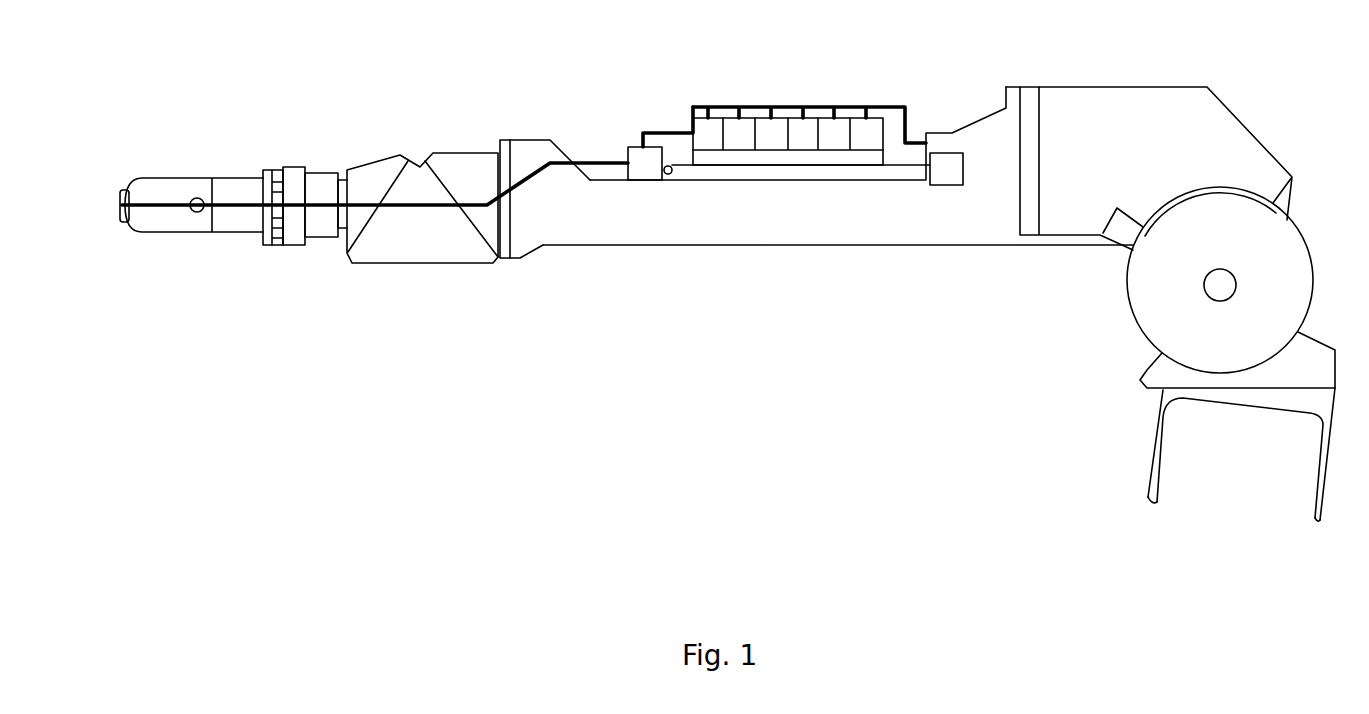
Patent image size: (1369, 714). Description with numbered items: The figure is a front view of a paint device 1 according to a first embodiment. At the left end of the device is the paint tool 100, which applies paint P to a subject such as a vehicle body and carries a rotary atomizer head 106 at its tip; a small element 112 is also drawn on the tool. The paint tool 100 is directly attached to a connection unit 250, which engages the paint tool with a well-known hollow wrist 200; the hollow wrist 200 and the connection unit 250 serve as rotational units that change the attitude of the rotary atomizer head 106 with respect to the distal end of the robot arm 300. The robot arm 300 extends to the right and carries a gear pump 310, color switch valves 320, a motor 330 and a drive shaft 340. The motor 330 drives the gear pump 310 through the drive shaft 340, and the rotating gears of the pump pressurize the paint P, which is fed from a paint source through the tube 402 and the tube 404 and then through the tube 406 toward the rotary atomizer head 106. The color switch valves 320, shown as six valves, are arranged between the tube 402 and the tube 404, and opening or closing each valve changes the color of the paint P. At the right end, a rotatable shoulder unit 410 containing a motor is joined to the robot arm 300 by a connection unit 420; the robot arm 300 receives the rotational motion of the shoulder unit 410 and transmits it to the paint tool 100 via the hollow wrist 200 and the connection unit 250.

The paint device 1 is at (1266, 68).
The paint P is at (160, 201).
The paint tool 100 is at (172, 233).
The rotary atomizer head 106 is at (121, 222).
The sensor 112 is at (196, 197).
The hollow wrist 200 is at (418, 161).
The connection unit 250 is at (346, 163).
The robot arm 300 is at (724, 246).
The gear pump 310 is at (631, 147).
The color switch valves 320 is at (779, 107).
The motor 330 is at (948, 185).
The drive shaft 340 is at (808, 180).
The tube 402 is at (885, 107).
The tube 404 is at (668, 133).
The tube 406 is at (541, 164).
The shoulder unit 410 is at (1130, 297).
The connection unit 420 is at (1125, 87).